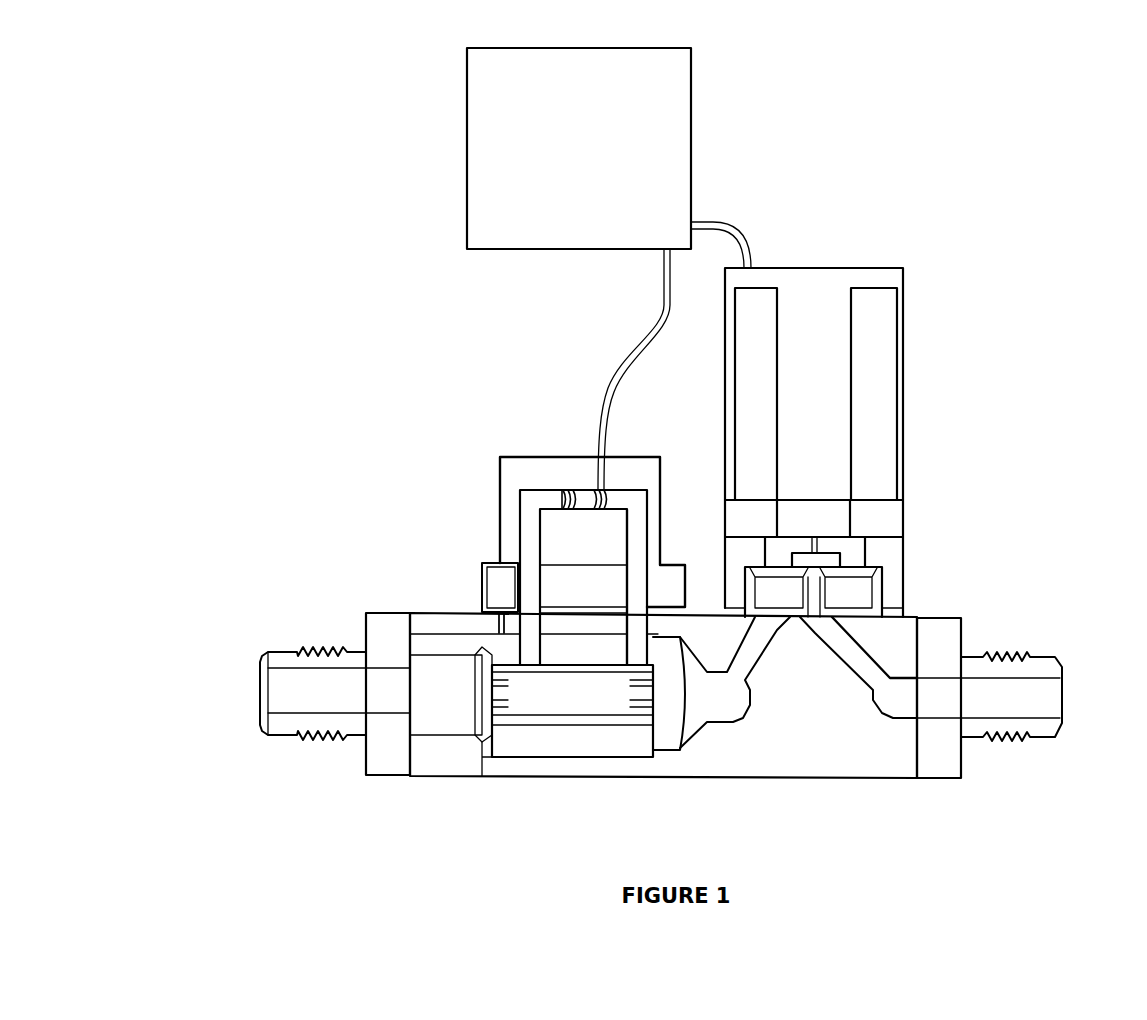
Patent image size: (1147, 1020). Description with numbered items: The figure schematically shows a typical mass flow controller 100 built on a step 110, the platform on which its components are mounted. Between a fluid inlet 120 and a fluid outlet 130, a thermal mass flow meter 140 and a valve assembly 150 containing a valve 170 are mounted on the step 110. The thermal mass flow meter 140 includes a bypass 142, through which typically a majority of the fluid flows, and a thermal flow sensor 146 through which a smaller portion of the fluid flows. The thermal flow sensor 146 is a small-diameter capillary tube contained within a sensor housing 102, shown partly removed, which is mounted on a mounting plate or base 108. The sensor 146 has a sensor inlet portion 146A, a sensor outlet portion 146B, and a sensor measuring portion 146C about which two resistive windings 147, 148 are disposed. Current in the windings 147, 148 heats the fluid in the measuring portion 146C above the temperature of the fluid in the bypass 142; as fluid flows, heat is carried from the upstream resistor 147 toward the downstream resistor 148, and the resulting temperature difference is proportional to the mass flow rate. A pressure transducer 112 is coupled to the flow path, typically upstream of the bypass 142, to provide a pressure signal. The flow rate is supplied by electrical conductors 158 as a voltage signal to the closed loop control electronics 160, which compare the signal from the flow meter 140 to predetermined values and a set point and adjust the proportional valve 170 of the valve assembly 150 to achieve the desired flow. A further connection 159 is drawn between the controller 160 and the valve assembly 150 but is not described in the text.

The mass flow controller 100 is at (357, 157).
The sensor housing 102 is at (499, 475).
The mounting plate or base 108 is at (480, 602).
The step 110 is at (653, 617).
The pressure transducer 112 is at (482, 582).
The fluid inlet 120 is at (277, 690).
The fluid outlet 130 is at (1050, 692).
The thermal mass flow meter 140 is at (499, 457).
The bypass 142 is at (560, 723).
The thermal flow sensor 146 is at (552, 473).
The sensor inlet portion 146A is at (520, 538).
The sensor outlet portion 146B is at (656, 530).
The sensor measuring portion 146C is at (583, 490).
The resistive winding 147 is at (596, 490).
The resistive winding 148 is at (566, 490).
The valve assembly 150 is at (880, 418).
The electrical conductors 158 is at (664, 328).
The wire 159 is at (733, 223).
The control electronics 160 is at (579, 148).
The valve 170 is at (840, 558).